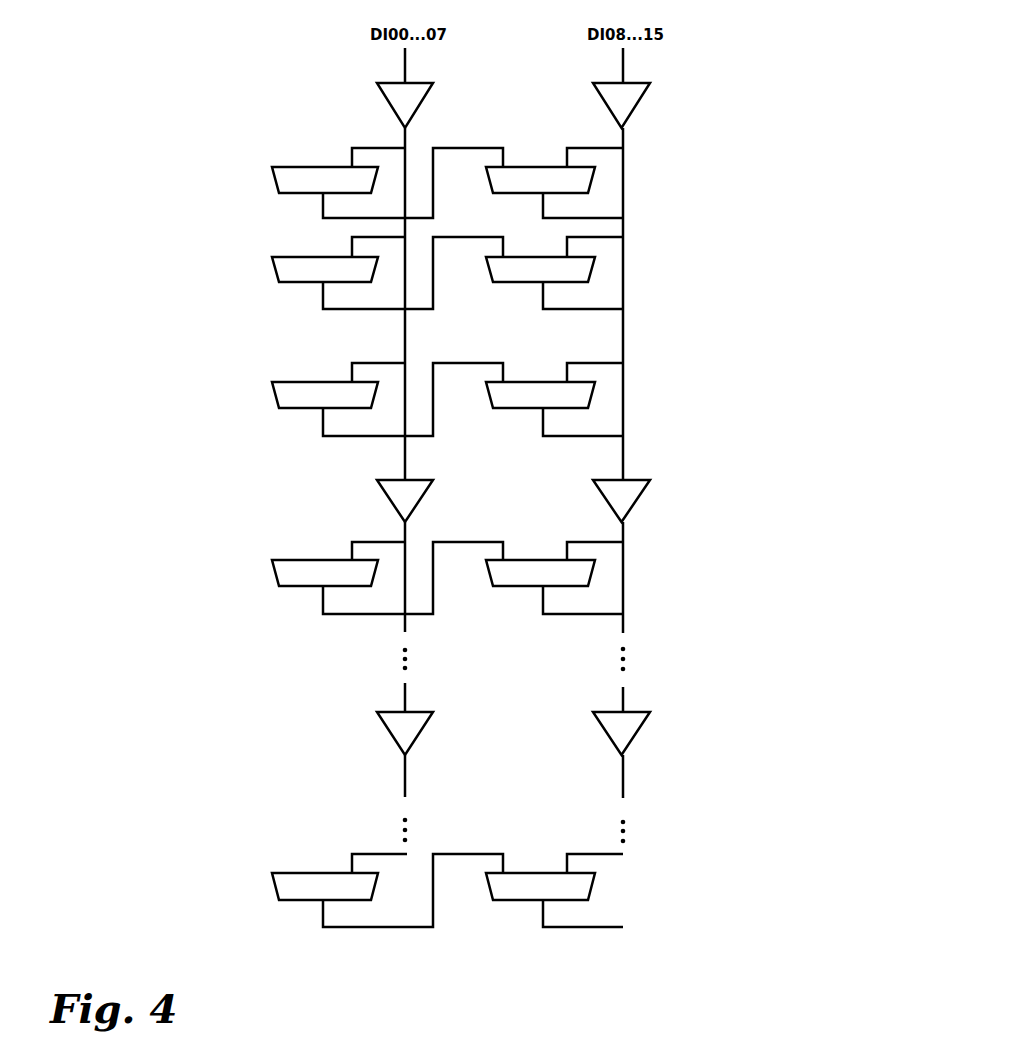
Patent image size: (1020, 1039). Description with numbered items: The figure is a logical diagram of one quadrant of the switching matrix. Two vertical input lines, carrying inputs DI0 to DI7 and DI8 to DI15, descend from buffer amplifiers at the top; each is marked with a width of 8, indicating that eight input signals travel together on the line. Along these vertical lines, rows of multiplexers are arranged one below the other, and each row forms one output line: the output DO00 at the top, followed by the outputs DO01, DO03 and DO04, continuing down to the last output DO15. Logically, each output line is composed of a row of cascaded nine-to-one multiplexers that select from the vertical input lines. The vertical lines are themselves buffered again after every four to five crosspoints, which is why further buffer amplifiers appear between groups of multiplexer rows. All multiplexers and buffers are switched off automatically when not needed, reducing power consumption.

The 8-bit bus width indicator 8 is at (634, 327).
The output line DO0 DO00 is at (623, 218).
The output line DO1 DO01 is at (623, 309).
The output line DO3 DO03 is at (623, 436).
The output line DO4 DO04 is at (623, 614).
The output line DO15 is at (623, 927).